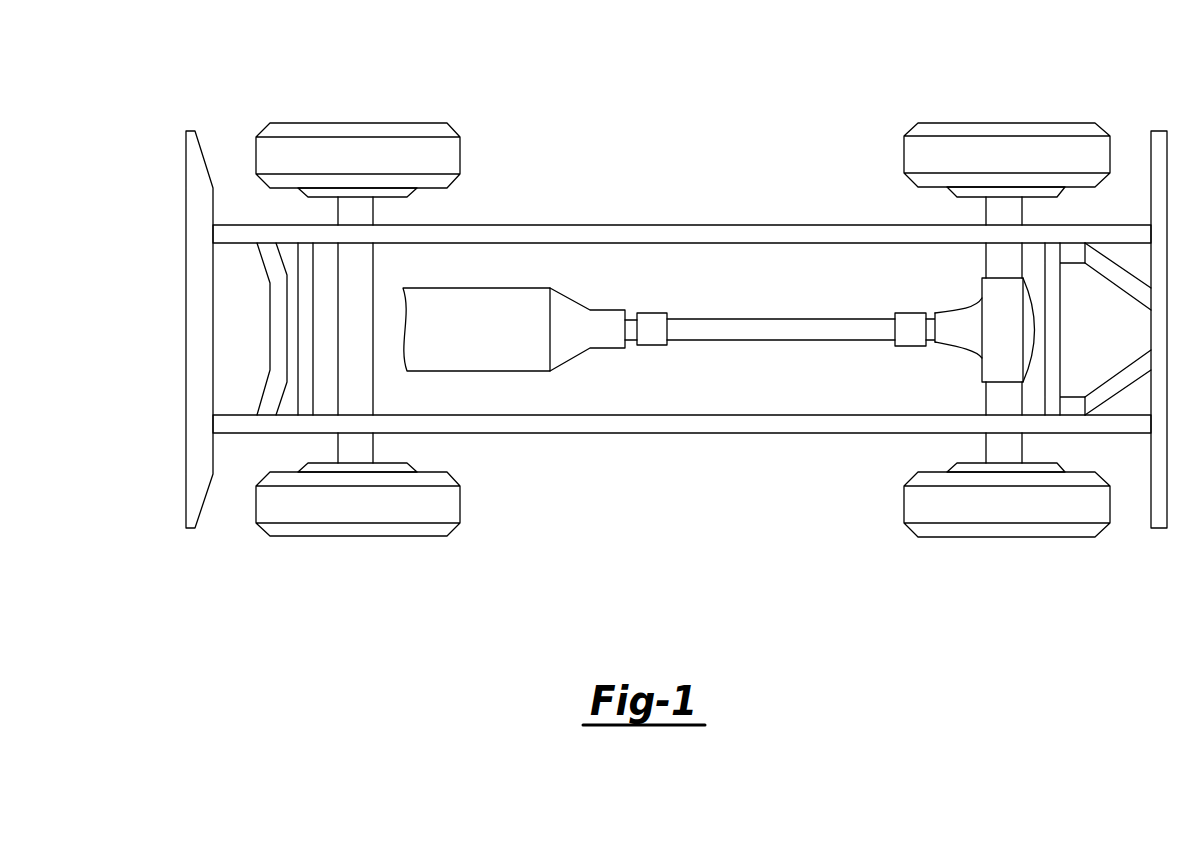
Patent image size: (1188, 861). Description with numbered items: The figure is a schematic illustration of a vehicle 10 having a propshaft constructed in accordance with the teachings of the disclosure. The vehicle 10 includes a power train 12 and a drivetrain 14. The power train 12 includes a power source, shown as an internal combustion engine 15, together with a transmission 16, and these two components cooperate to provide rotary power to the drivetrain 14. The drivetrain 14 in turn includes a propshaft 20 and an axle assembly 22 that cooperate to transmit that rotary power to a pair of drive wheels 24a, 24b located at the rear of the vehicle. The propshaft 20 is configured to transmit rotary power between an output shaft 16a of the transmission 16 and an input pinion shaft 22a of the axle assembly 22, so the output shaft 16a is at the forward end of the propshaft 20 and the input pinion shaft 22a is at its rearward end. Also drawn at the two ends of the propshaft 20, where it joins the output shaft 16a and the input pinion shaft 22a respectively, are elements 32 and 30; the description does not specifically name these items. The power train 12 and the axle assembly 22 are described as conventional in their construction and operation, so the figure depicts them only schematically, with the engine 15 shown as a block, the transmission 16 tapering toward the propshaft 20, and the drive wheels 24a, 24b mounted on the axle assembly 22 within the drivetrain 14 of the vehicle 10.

The vehicle 10 is at (573, 93).
The power train 12 is at (476, 331).
The drivetrain 14 is at (793, 385).
The internal combustion engine 15 is at (517, 358).
The transmission 16 is at (584, 311).
The output shaft 16a is at (630, 322).
The propshaft 20 is at (779, 311).
The axle assembly 22 is at (945, 369).
The input pinion shaft 22a is at (932, 324).
The drive wheel 24a is at (1040, 536).
The drive wheel 24b is at (1040, 122).
The rear universal joint 30 is at (905, 331).
The front universal joint 32 is at (650, 337).